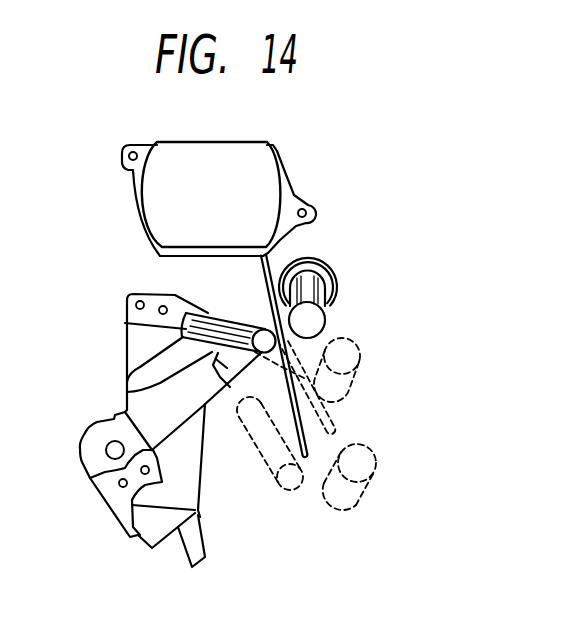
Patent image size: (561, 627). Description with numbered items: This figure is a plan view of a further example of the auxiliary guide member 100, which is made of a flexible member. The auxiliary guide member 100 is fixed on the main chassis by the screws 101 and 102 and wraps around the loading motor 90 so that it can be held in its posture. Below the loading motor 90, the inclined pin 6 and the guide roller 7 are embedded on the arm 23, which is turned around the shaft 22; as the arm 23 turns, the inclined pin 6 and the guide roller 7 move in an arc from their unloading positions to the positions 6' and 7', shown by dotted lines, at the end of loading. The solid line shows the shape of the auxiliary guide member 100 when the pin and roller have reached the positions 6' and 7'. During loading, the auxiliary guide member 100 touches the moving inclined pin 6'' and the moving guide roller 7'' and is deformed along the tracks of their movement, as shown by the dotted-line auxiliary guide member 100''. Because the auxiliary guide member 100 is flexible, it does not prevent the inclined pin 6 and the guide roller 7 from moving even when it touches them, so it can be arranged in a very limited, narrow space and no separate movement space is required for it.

The loading motor 90 is at (215, 158).
The auxiliary guide member 100 is at (232, 288).
The screw 101 is at (121, 150).
The screw 102 is at (317, 207).
The inclined pin 6 is at (194, 297).
The guide roller 7 is at (324, 289).
The arm 23 is at (140, 397).
The shaft 22 is at (106, 449).
The moving guide roller 7'' is at (364, 357).
The guide roller position at end of loading 7' is at (369, 486).
The moving inclined pin 6'' is at (263, 443).
The inclined pin position at end of loading 6' is at (292, 435).
The deformed auxiliary guide member 100'' is at (344, 390).